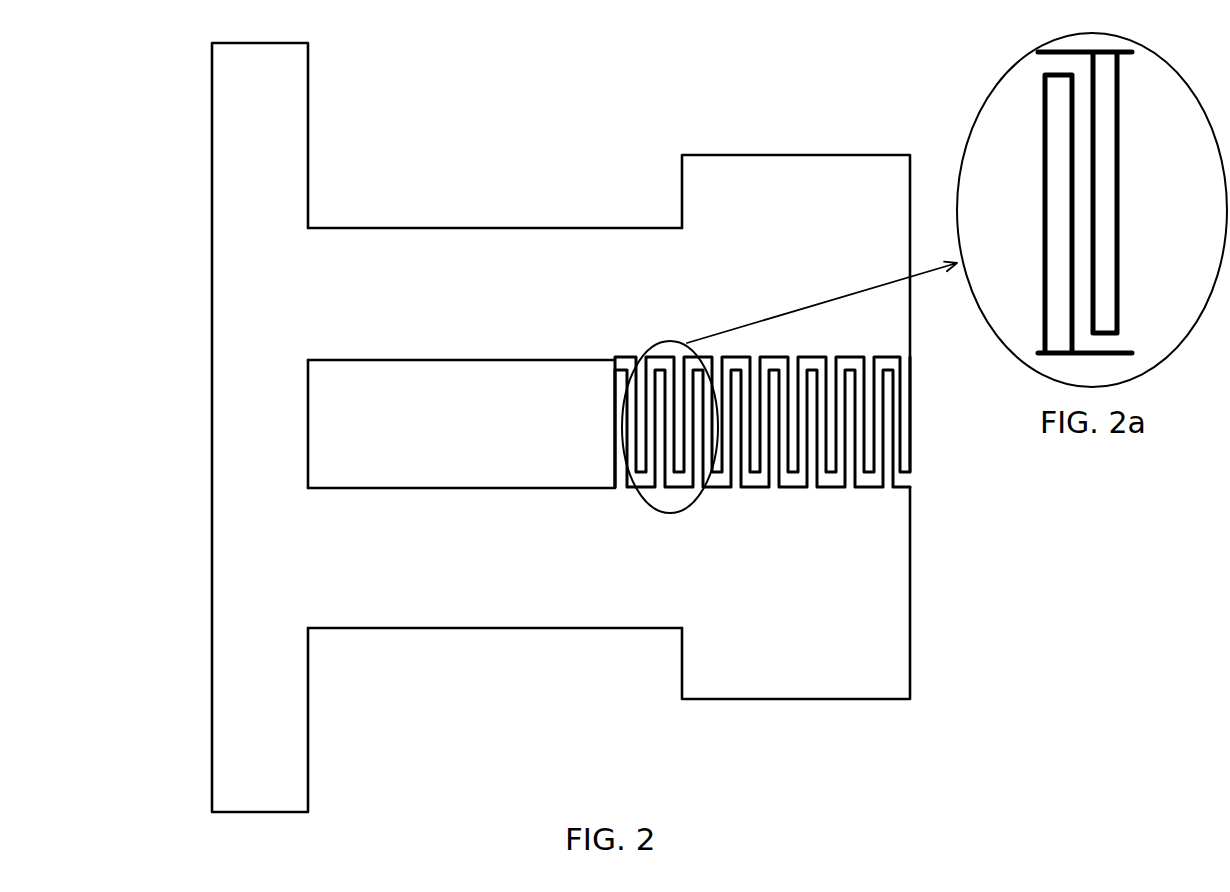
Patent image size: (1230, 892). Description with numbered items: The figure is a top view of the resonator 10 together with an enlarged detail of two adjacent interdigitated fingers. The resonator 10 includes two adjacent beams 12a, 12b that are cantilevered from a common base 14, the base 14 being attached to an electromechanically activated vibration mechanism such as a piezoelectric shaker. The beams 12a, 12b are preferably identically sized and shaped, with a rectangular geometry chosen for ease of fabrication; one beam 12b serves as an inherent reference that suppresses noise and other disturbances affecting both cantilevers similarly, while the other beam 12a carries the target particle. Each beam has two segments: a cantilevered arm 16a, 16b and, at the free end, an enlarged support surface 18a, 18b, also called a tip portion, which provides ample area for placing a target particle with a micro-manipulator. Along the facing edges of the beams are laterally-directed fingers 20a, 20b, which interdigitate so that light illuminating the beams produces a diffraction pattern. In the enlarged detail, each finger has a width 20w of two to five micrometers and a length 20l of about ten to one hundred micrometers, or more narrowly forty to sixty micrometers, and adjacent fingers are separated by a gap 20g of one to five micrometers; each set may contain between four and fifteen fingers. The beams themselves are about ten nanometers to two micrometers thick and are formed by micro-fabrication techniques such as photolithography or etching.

In FIG. 2, the resonator 10 is at (100, 74).
In FIG. 2, the beam 12a is at (552, 174).
In FIG. 2, the beam 12b is at (428, 670).
In FIG. 2, the base 14 is at (210, 410).
In FIG. 2, the arm 16a is at (368, 228).
In FIG. 2, the arm 16b is at (584, 628).
In FIG. 2, the support surface 18a is at (817, 157).
In FIG. 2, the support surface 18b is at (856, 700).
In FIG. 2, the fingers 20a is at (877, 465).
In FIG. 2, the fingers 20b is at (885, 482).
In FIG. 2a, the length 20l is at (1136, 321).
In FIG. 2a, the gap 20g is at (1110, 223).
In FIG. 2a, the width 20w is at (1008, 342).